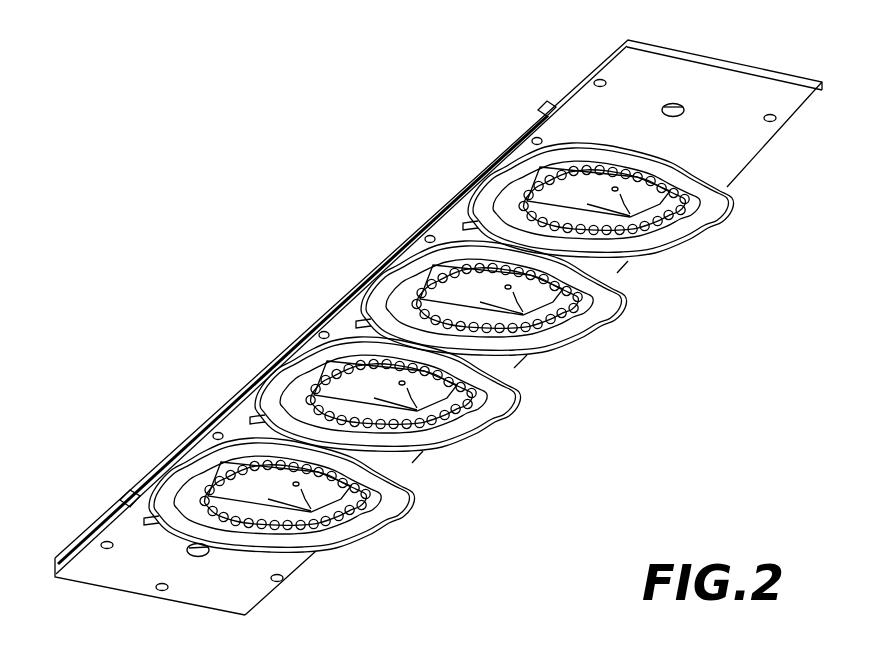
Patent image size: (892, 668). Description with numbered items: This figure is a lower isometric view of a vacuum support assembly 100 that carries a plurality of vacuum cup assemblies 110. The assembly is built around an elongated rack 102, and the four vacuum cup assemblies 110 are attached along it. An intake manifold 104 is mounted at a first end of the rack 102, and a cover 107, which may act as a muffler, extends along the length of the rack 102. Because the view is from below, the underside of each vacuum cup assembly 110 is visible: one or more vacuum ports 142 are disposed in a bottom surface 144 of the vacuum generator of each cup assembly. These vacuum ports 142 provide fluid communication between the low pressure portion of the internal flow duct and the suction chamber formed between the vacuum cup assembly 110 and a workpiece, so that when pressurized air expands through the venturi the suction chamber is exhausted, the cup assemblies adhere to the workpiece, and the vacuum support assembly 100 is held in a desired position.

The vacuum support assembly 100 is at (180, 232).
The rack 102 is at (732, 147).
The intake manifold 104 is at (95, 522).
The cover 107 is at (467, 178).
The vacuum cup assembly 110 is at (645, 357).
The vacuum port 142 is at (693, 217).
The bottom surface 144 is at (439, 339).